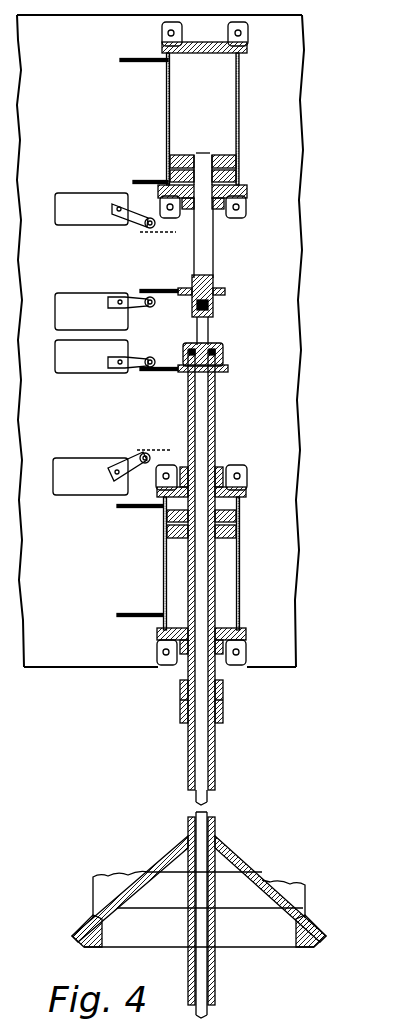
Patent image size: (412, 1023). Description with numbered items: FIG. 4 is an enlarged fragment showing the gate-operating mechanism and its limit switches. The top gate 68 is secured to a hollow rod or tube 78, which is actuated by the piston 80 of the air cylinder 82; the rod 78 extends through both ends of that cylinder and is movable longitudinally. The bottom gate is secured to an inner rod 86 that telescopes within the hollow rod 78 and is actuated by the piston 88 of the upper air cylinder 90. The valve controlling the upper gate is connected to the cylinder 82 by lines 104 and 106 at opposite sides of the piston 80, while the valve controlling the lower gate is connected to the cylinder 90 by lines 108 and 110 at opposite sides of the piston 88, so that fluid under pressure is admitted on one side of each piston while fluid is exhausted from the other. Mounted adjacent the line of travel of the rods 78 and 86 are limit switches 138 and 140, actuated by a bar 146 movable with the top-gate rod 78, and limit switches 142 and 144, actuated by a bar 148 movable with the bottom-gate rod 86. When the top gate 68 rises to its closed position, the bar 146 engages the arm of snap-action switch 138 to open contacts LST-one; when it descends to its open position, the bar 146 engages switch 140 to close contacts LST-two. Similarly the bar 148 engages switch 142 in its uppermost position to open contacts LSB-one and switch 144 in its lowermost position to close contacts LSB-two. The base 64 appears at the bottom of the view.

The base 64 is at (91, 892).
The top gate 68 is at (242, 860).
The hollow rod or tube 78 is at (217, 416).
The piston 80 is at (223, 542).
The air cylinder 82 is at (240, 600).
The rod 86 is at (214, 252).
The piston 88 is at (222, 153).
The air cylinder 90 is at (240, 90).
The line 104 is at (117, 509).
The line 106 is at (135, 612).
The line 108 is at (140, 56).
The line 110 is at (148, 178).
The limit switch 138 is at (70, 376).
The limit switch 140 is at (82, 457).
The limit switch 142 is at (75, 230).
The limit switch 144 is at (83, 290).
The bar 146 is at (163, 374).
The bar 148 is at (168, 290).